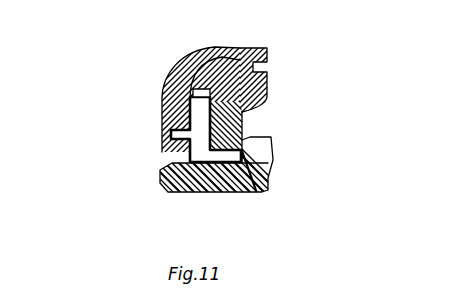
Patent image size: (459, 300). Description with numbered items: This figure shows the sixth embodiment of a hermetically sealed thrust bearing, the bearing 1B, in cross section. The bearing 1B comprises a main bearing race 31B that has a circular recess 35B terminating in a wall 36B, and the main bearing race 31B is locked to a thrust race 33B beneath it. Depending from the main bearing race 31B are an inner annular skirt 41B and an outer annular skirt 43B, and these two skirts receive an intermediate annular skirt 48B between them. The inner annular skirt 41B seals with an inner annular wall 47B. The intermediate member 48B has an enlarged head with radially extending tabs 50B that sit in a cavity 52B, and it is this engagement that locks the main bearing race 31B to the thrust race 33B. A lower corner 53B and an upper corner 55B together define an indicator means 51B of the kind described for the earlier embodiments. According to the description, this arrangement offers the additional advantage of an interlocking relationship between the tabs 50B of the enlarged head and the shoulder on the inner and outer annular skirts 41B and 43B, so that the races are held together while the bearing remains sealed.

The bearing 1B is at (223, 34).
The main bearing race 31B is at (202, 65).
The thrust race 33B is at (245, 180).
The circular recess 35B is at (268, 66).
The wall 36B is at (257, 64).
The inner annular skirt 41B is at (236, 140).
The outer annular skirt 43B is at (172, 131).
The inner annular wall 47B is at (270, 142).
The intermediate annular skirt 48B is at (170, 98).
The radially extending tabs 50B is at (248, 113).
The indicator means 51B is at (172, 157).
The cavity 52B is at (186, 80).
The lower corner 53B is at (170, 163).
The upper corner 55B is at (170, 153).